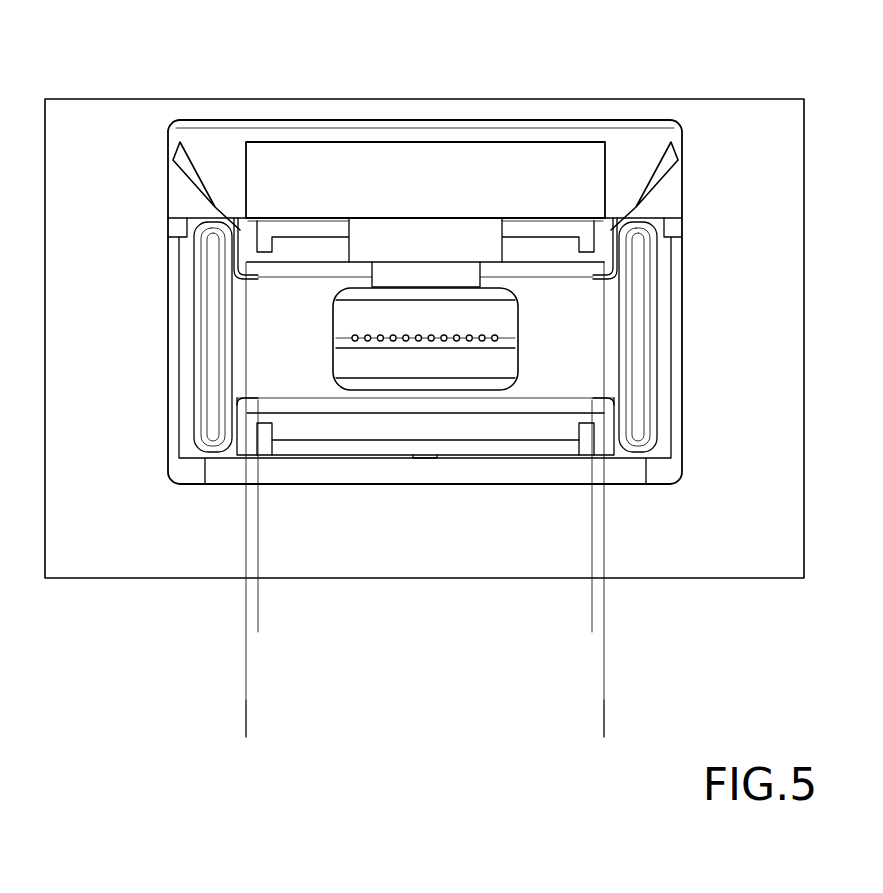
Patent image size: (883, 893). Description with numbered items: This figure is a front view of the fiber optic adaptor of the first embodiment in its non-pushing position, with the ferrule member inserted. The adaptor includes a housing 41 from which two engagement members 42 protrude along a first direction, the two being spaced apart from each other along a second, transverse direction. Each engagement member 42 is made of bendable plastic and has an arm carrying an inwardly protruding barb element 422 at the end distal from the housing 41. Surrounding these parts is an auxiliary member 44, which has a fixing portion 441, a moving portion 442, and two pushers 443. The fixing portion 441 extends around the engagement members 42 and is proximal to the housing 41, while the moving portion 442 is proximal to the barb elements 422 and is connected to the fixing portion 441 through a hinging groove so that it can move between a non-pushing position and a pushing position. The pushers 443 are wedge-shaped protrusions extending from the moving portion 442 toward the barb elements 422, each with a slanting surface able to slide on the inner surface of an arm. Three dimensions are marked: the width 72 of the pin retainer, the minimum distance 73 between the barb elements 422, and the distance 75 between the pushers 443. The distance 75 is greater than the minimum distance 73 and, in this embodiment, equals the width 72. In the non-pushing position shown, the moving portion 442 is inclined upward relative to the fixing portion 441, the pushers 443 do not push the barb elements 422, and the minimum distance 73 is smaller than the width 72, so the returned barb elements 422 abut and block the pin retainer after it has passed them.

The housing 41 is at (425, 160).
The engagement member 42 is at (188, 323).
The auxiliary member 44 is at (578, 120).
The fixing portion 441 is at (672, 472).
The moving portion 442 is at (263, 120).
The pusher 443 is at (205, 160).
The barb element 422 is at (250, 360).
The width of the pin retainer 72 is at (246, 679).
The minimum distance between the barb elements 73 is at (258, 628).
The distance between the pushers 75 is at (246, 732).